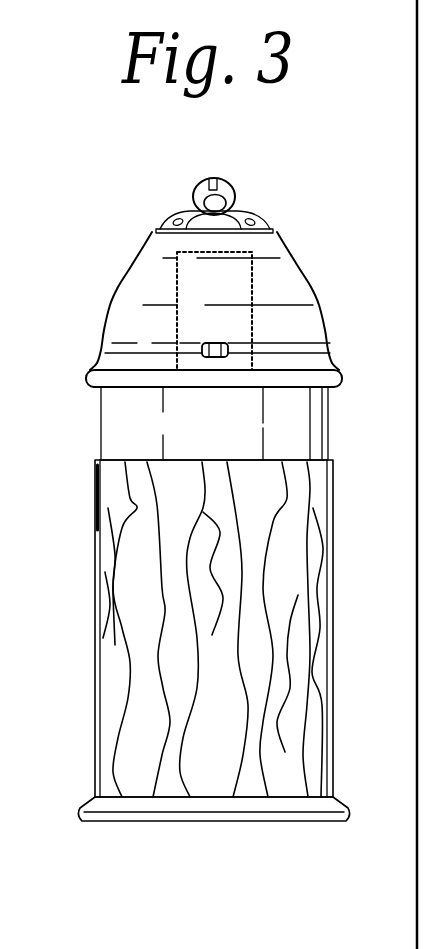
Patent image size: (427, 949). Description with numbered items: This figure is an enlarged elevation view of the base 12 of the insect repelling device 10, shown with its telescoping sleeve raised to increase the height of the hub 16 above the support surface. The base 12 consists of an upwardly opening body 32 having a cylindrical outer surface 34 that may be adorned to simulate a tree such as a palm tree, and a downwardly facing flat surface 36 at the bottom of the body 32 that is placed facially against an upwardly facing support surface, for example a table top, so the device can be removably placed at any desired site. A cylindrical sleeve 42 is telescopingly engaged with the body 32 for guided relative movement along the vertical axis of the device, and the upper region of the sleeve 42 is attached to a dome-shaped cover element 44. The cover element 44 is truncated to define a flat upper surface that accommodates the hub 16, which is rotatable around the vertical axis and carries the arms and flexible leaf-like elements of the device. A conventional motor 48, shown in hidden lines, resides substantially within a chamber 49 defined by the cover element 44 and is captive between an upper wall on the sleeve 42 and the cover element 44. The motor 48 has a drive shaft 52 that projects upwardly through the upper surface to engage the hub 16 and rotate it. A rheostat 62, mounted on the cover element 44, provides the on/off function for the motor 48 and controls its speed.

The insect repelling device 10 is at (55, 364).
The base 12 is at (334, 525).
The hub 16 is at (243, 212).
The body 32 is at (323, 657).
The cylindrical outer surface 34 is at (335, 583).
The downwardly facing flat surface 36 is at (258, 822).
The cylindrical sleeve 42 is at (303, 427).
The dome-shaped cover element 44 is at (118, 287).
The motor 48 is at (235, 287).
The chamber 49 is at (152, 277).
The drive shaft 52 is at (213, 233).
The rheostat 62 is at (228, 345).